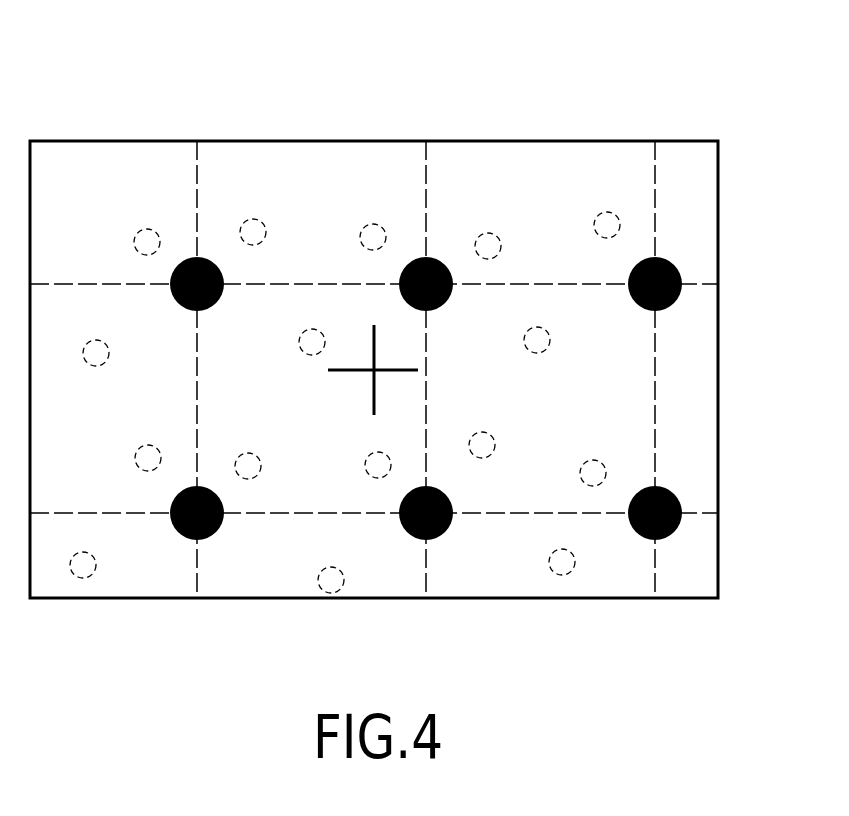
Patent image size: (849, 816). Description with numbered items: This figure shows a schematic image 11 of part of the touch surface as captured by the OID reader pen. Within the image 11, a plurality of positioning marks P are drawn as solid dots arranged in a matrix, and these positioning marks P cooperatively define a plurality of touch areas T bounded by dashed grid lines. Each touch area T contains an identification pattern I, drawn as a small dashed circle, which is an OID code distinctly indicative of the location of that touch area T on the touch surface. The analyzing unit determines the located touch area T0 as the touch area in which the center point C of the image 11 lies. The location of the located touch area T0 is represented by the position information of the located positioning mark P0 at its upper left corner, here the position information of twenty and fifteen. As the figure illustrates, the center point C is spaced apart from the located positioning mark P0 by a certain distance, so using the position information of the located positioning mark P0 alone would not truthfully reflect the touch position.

The image 11 is at (718, 260).
The positioning marks P is at (678, 300).
The located positioning mark P0 is at (180, 307).
The touch areas T is at (623, 353).
The located touch area T0 is at (348, 308).
The identification patterns I is at (605, 467).
The center point C is at (374, 373).